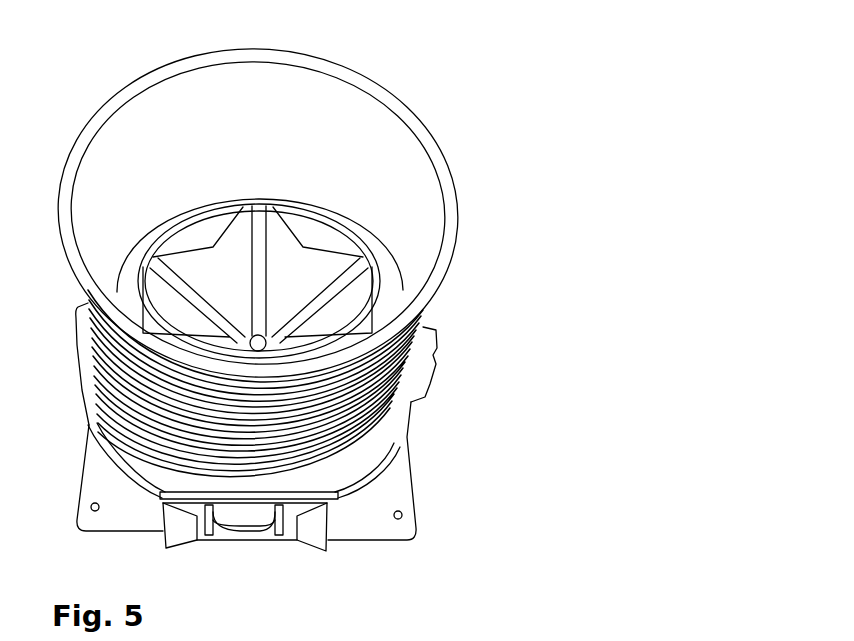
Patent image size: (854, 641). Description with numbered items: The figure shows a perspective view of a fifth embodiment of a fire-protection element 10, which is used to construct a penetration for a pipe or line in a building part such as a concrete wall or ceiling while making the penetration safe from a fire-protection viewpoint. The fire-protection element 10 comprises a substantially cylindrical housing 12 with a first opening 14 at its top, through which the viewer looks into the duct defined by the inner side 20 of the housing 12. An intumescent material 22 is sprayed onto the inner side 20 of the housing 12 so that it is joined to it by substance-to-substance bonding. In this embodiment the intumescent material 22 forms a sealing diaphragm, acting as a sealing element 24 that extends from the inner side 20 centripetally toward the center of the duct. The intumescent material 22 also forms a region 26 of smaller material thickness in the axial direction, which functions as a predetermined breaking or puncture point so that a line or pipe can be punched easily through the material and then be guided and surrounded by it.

The fire-protection element 10 is at (478, 147).
The cylindrical housing 12 is at (447, 248).
The first opening 14 is at (356, 82).
The inner side 20 is at (117, 175).
The intumescent material 22 is at (423, 325).
The sealing element 24 is at (276, 240).
The region 26 is at (340, 375).